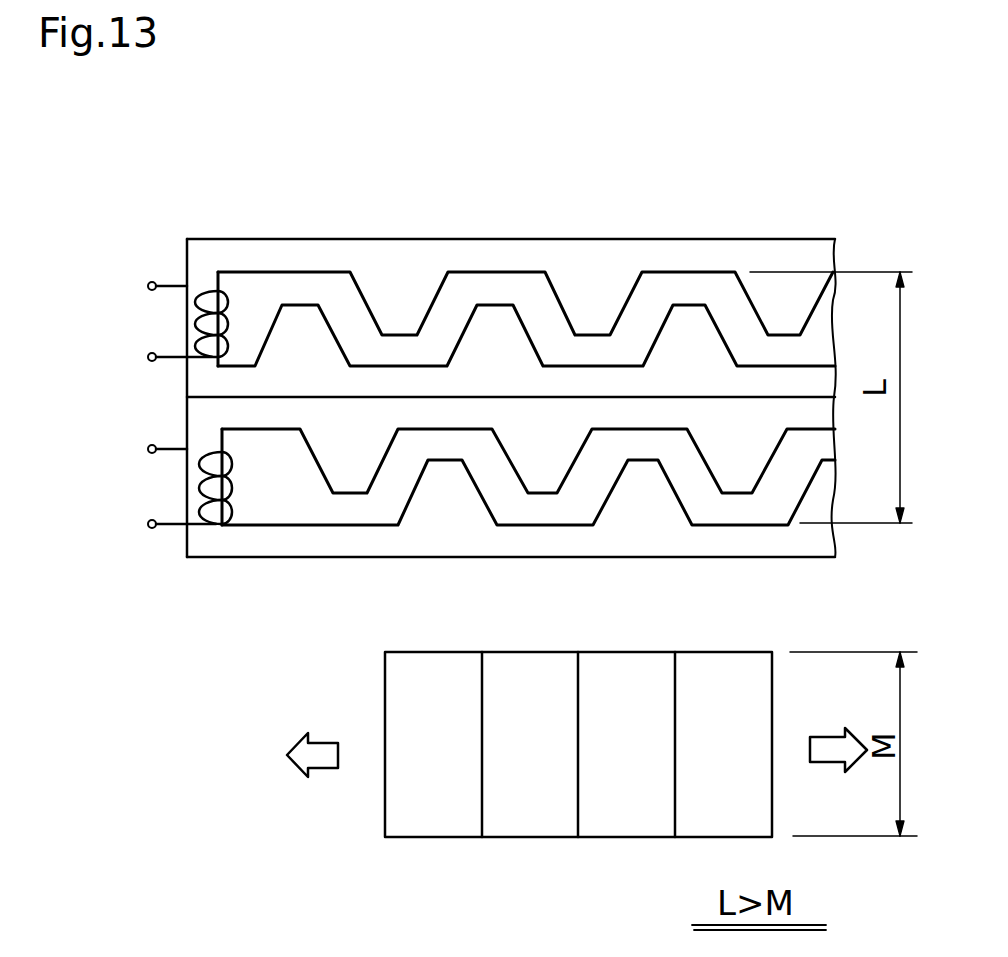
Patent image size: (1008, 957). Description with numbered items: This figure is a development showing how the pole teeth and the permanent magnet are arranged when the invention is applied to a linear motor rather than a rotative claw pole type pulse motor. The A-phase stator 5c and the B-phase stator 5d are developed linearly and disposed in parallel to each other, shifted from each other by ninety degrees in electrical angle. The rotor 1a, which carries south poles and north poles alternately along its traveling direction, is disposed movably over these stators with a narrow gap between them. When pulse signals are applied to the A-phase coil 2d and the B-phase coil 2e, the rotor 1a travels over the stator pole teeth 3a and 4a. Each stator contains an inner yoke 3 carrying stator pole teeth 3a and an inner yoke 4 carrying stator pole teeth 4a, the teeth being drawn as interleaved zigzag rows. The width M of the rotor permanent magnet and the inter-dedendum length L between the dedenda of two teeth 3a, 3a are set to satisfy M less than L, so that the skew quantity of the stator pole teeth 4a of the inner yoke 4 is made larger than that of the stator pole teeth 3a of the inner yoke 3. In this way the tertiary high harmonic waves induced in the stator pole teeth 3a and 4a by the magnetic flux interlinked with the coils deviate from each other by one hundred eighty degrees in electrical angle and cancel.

The rotor 1a is at (372, 840).
The A-phase coil 2d is at (170, 283).
The B-phase coil 2e is at (170, 446).
The inner yoke 3 is at (307, 262).
The stator pole teeth 3a is at (400, 298).
The inner yoke 4 is at (601, 383).
The stator pole teeth 4a is at (690, 325).
The A-phase stator 5c is at (498, 238).
The B-phase stator 5d is at (295, 560).